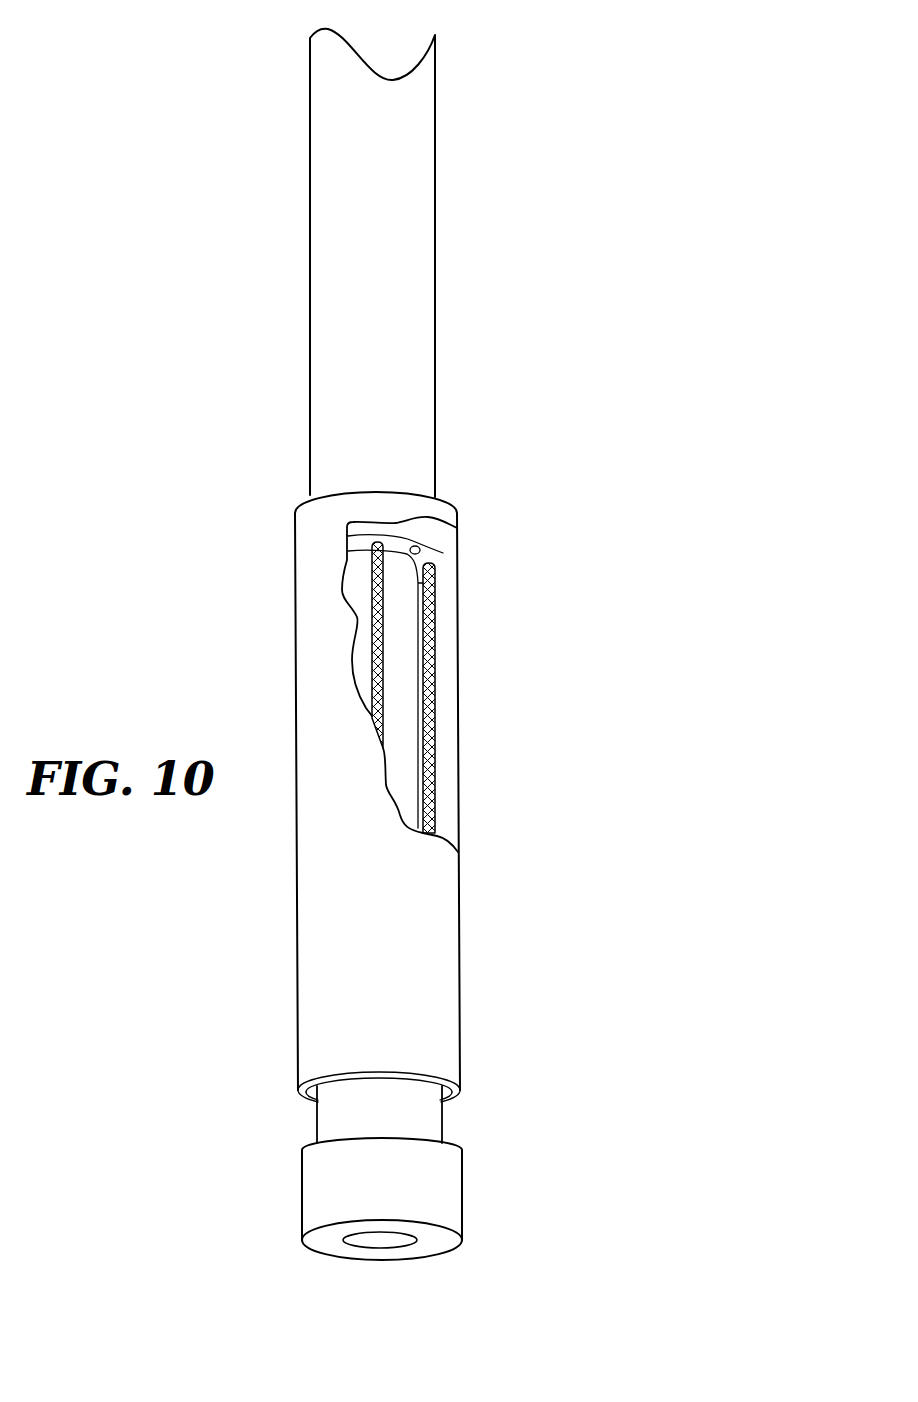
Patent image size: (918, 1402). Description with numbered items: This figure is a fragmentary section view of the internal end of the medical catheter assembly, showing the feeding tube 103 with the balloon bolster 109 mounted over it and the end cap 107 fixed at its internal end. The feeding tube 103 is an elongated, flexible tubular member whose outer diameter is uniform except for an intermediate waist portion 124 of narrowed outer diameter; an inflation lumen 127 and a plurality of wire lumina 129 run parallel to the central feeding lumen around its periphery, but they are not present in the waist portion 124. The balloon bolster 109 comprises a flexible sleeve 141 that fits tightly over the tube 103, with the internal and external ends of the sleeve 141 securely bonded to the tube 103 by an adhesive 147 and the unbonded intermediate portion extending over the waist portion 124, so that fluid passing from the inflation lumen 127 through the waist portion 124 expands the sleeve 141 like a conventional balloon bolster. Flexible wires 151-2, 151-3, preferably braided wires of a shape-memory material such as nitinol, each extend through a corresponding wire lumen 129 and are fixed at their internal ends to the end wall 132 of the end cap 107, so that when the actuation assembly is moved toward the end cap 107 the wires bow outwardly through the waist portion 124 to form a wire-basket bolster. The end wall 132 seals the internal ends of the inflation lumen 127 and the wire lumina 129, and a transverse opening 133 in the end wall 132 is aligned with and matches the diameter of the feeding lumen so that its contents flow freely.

The feeding tube 103 is at (448, 197).
The end cap 107 is at (417, 1222).
The balloon bolster 109 is at (371, 817).
The intermediate waist portion 124 is at (358, 618).
The inflation lumen 127 is at (432, 559).
The wire lumina 129 is at (372, 546).
The end wall 132 is at (323, 1242).
The transverse opening 133 is at (385, 1238).
The flexible sleeve 141 is at (435, 932).
The adhesive 147 is at (445, 1091).
The flexible wire 151-2 is at (384, 648).
The flexible wire 151-3 is at (435, 707).